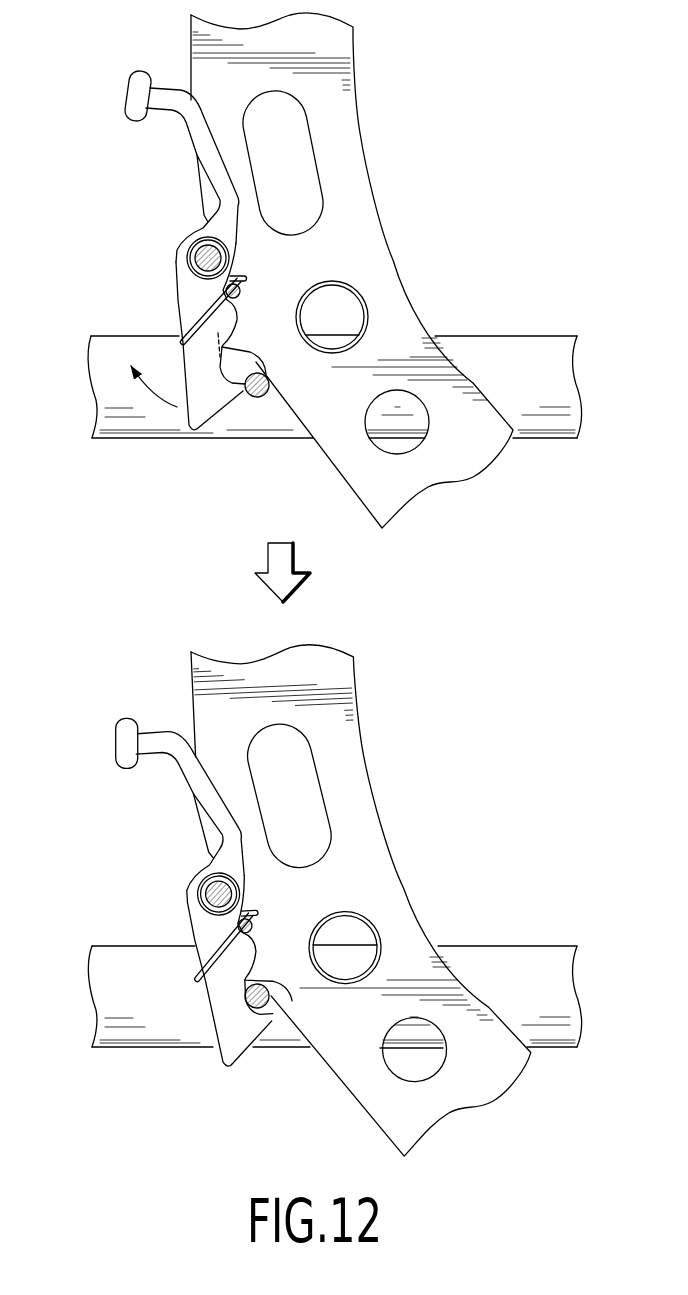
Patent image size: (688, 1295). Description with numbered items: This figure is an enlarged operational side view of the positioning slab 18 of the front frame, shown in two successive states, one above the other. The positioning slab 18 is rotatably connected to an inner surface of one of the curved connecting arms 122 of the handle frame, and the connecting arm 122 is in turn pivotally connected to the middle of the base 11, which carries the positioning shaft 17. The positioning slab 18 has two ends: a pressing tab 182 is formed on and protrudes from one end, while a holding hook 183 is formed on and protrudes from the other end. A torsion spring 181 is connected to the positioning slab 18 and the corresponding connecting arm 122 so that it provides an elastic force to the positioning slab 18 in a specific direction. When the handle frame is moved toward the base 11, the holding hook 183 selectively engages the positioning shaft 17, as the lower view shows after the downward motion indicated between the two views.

The base 11 is at (522, 333).
The positioning shaft 17 is at (269, 390).
The positioning slab 18 is at (180, 560).
The connecting arm 122 is at (345, 177).
The torsion spring 181 is at (200, 309).
The pressing tab 182 is at (130, 90).
The holding hook 183 is at (203, 408).